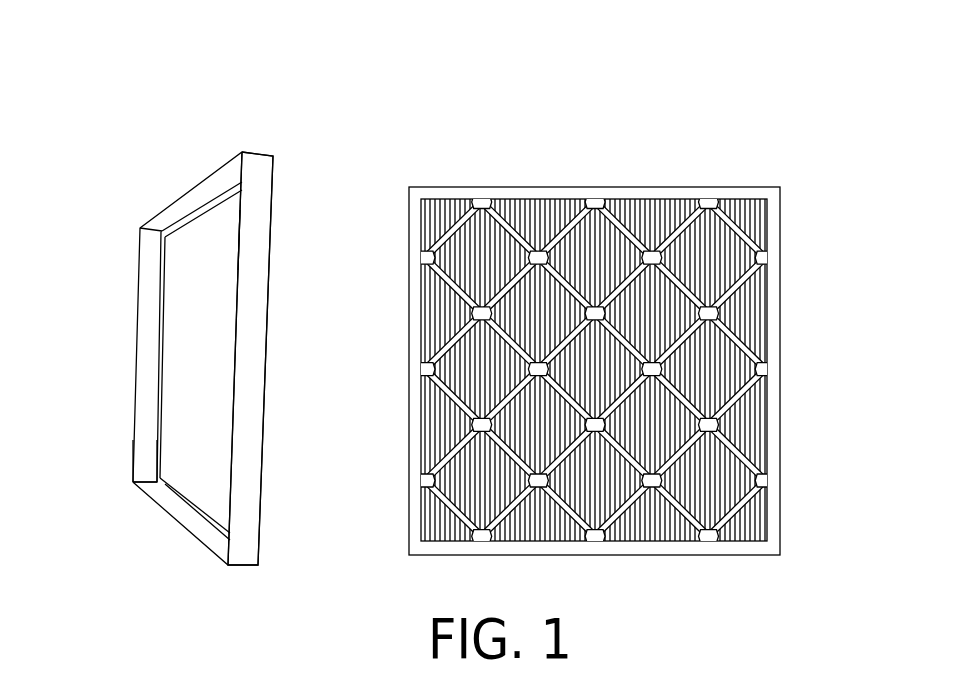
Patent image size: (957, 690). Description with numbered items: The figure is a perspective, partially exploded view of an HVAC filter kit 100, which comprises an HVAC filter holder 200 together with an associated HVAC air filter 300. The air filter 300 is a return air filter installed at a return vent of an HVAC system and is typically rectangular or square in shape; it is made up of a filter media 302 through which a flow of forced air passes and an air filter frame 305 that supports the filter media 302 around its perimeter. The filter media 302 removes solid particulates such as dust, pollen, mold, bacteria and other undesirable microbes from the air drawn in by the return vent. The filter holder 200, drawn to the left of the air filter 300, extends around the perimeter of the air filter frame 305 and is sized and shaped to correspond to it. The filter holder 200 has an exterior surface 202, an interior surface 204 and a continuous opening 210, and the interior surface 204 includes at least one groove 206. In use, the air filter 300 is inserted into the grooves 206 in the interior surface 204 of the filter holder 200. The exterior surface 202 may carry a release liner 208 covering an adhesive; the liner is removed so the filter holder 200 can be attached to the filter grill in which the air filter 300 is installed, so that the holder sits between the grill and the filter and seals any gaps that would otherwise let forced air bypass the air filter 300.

The HVAC filter kit 100 is at (358, 122).
The HVAC filter holder 200 is at (196, 358).
The exterior surface 202 is at (258, 458).
The interior surface 204 is at (187, 515).
The groove 206 is at (135, 482).
The release liner 208 is at (253, 323).
The continuous opening 210 is at (248, 255).
The HVAC air filter 300 is at (650, 328).
The filter media 302 is at (720, 298).
The air filter frame 305 is at (617, 187).